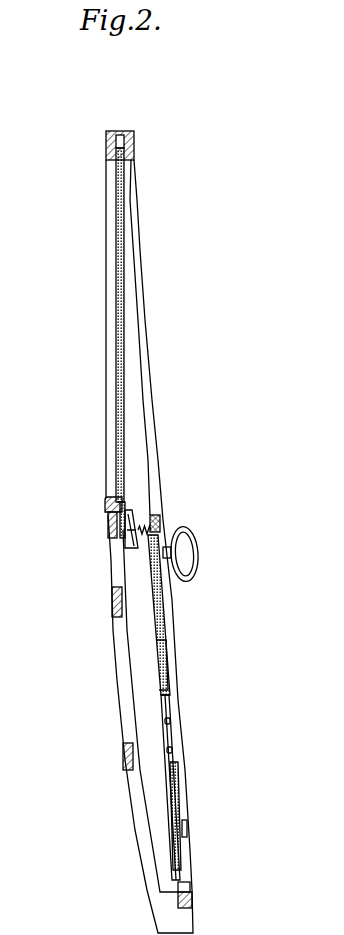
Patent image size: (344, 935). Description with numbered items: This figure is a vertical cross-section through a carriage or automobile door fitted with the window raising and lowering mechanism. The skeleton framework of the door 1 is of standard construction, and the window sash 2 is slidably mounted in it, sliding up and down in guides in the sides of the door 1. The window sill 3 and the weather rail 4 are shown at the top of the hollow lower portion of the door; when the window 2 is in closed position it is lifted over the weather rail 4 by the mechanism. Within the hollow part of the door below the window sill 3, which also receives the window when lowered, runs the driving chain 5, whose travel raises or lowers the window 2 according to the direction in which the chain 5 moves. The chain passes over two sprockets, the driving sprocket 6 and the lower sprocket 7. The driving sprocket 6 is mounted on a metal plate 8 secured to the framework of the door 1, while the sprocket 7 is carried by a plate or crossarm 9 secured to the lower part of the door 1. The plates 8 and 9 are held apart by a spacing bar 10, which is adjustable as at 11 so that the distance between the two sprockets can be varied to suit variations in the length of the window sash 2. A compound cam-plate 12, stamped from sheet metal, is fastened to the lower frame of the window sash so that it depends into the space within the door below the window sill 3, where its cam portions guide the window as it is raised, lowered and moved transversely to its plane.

The skeleton framework of an automobile door 1 is at (117, 577).
The window sash 2 is at (117, 347).
The window sill 3 is at (104, 503).
The weather rail 4 is at (120, 505).
The driving chain 5 is at (162, 665).
The driving sprocket 6 is at (152, 562).
The sprocket 7 is at (177, 823).
The metal plate 8 is at (158, 528).
The plate or crossarm 9 is at (188, 822).
The spacing bar 10 is at (174, 699).
The adjustment 11 is at (191, 735).
The compound cam-plate 12 is at (132, 542).